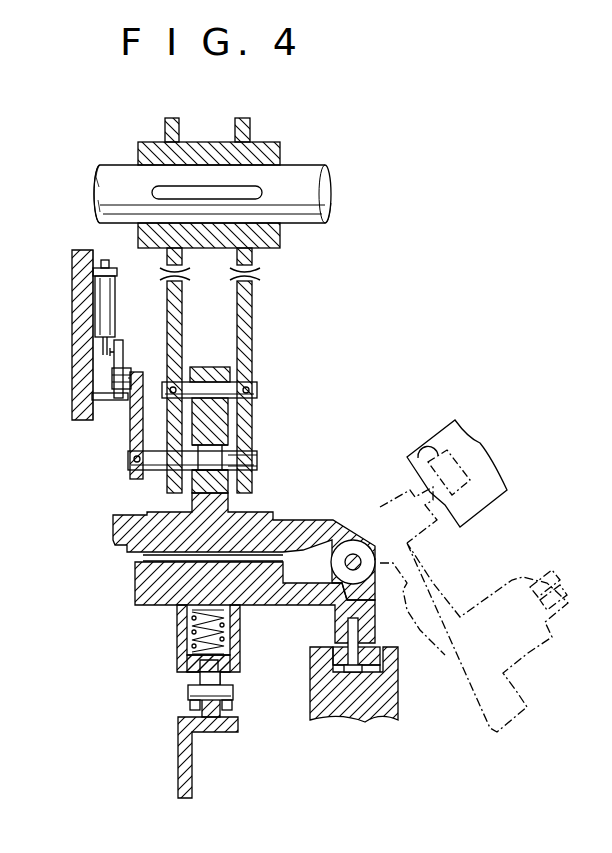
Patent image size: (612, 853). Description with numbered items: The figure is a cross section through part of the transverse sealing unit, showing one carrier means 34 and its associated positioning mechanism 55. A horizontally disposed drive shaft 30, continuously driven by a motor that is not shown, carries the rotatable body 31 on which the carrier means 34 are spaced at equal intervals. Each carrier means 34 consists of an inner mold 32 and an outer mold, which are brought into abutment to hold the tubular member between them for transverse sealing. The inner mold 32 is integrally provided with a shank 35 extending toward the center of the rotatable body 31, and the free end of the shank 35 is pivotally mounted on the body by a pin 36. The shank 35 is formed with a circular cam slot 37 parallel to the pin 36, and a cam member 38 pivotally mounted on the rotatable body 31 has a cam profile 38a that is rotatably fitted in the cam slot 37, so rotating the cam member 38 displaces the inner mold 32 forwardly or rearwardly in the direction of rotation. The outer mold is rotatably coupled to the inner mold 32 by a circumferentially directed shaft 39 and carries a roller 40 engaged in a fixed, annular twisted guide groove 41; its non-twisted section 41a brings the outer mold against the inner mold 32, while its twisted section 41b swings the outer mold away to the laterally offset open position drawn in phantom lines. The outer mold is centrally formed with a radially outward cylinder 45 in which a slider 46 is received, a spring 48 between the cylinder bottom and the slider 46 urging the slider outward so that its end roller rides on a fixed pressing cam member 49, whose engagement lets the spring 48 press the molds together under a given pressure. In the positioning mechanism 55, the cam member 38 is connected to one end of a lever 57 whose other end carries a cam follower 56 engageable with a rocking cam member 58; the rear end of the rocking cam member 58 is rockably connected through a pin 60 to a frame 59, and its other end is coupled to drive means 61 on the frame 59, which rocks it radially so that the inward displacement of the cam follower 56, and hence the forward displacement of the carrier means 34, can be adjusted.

The drive shaft 30 is at (294, 168).
The rotatable body 31 is at (256, 296).
The inner mold 32 is at (110, 528).
The carrier means 34 is at (312, 517).
The shank 35 is at (206, 368).
The pin 36 is at (258, 390).
The cam slot 37 is at (259, 461).
The cam member 38 is at (124, 462).
The cam profile 38a is at (232, 438).
The shaft 39 is at (355, 553).
The roller 40 is at (360, 632).
The twisted guide groove 41 is at (398, 663).
The non-twisted section 41a is at (342, 676).
The twisted section 41b is at (416, 458).
The cylinder 45 is at (177, 658).
The slider 46 is at (188, 638).
The spring 48 is at (224, 653).
The pressing cam member 49 is at (180, 770).
The positioning mechanism 55 is at (121, 338).
The cam follower 56 is at (112, 378).
The lever 57 is at (130, 442).
The rocking cam member 58 is at (124, 362).
The frame 59 is at (76, 252).
The pin 60 is at (108, 401).
The drive means 61 is at (98, 306).